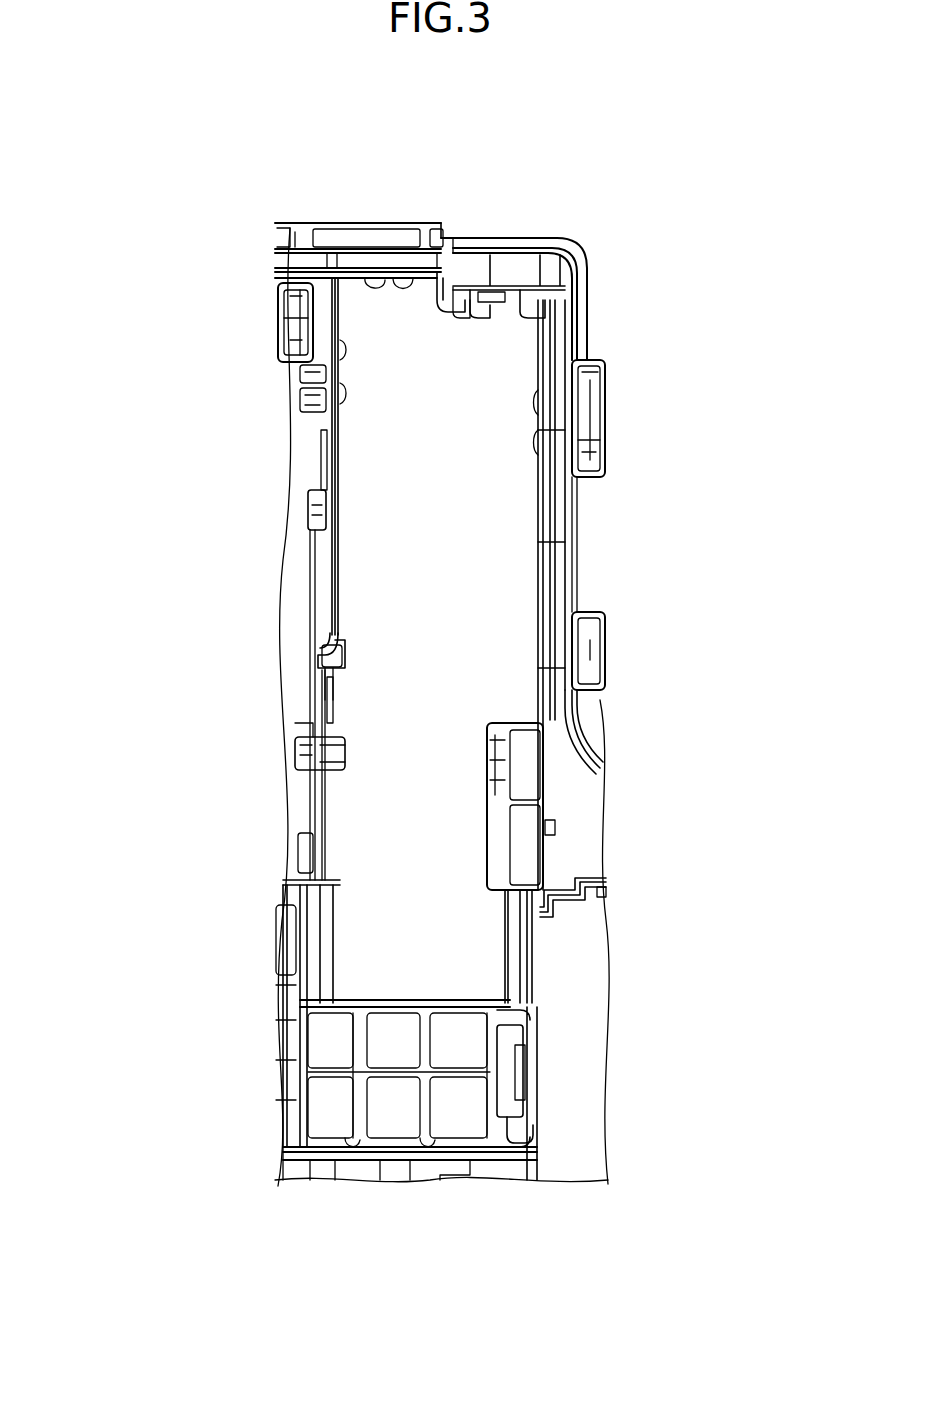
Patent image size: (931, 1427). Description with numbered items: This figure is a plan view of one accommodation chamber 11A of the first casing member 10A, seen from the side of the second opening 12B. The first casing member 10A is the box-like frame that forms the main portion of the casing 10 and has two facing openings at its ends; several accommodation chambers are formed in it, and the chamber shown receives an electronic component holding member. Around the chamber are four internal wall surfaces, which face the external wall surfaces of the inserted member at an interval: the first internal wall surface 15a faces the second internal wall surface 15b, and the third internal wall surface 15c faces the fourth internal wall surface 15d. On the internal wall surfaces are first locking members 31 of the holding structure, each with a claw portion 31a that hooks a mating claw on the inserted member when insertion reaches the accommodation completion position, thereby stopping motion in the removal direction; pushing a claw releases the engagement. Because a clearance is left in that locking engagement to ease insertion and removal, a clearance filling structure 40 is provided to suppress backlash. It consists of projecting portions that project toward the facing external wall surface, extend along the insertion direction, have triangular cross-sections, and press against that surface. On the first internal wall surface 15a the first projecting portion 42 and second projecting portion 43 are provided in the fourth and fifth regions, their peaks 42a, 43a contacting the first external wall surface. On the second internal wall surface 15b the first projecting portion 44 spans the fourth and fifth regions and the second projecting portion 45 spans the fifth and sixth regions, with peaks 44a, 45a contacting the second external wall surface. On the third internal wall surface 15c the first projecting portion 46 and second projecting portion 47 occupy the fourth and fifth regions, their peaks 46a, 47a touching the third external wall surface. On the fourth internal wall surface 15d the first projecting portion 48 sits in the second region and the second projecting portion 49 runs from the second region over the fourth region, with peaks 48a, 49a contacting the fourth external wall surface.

The first casing member 10A is at (512, 134).
The casing 10 is at (448, 711).
The accommodation chamber 11A is at (520, 596).
The second opening 12B is at (595, 800).
The first internal wall surface 15a is at (540, 502).
The second internal wall surface 15b is at (310, 496).
The third internal wall surface 15c is at (300, 288).
The fourth internal wall surface 15d is at (310, 1135).
The first locking member 31 is at (500, 315).
The claw portion 31a is at (540, 365).
The clearance filling structure 40 is at (335, 142).
The first projecting portion 42 is at (590, 442).
The peak 42a is at (538, 441).
The second projecting portion 43 is at (590, 395).
The peak 43a is at (538, 402).
The first projecting portion 44 is at (300, 368).
The peak 44a is at (345, 350).
The second projecting portion 45 is at (300, 400).
The peak 45a is at (345, 393).
The first projecting portion 46 is at (410, 278).
The peak 46a is at (410, 290).
The second projecting portion 47 is at (366, 280).
The peak 47a is at (378, 287).
The first projecting portion 48 is at (350, 1145).
The peak 48a is at (360, 1130).
The second projecting portion 49 is at (428, 1145).
The peak 49a is at (428, 1130).